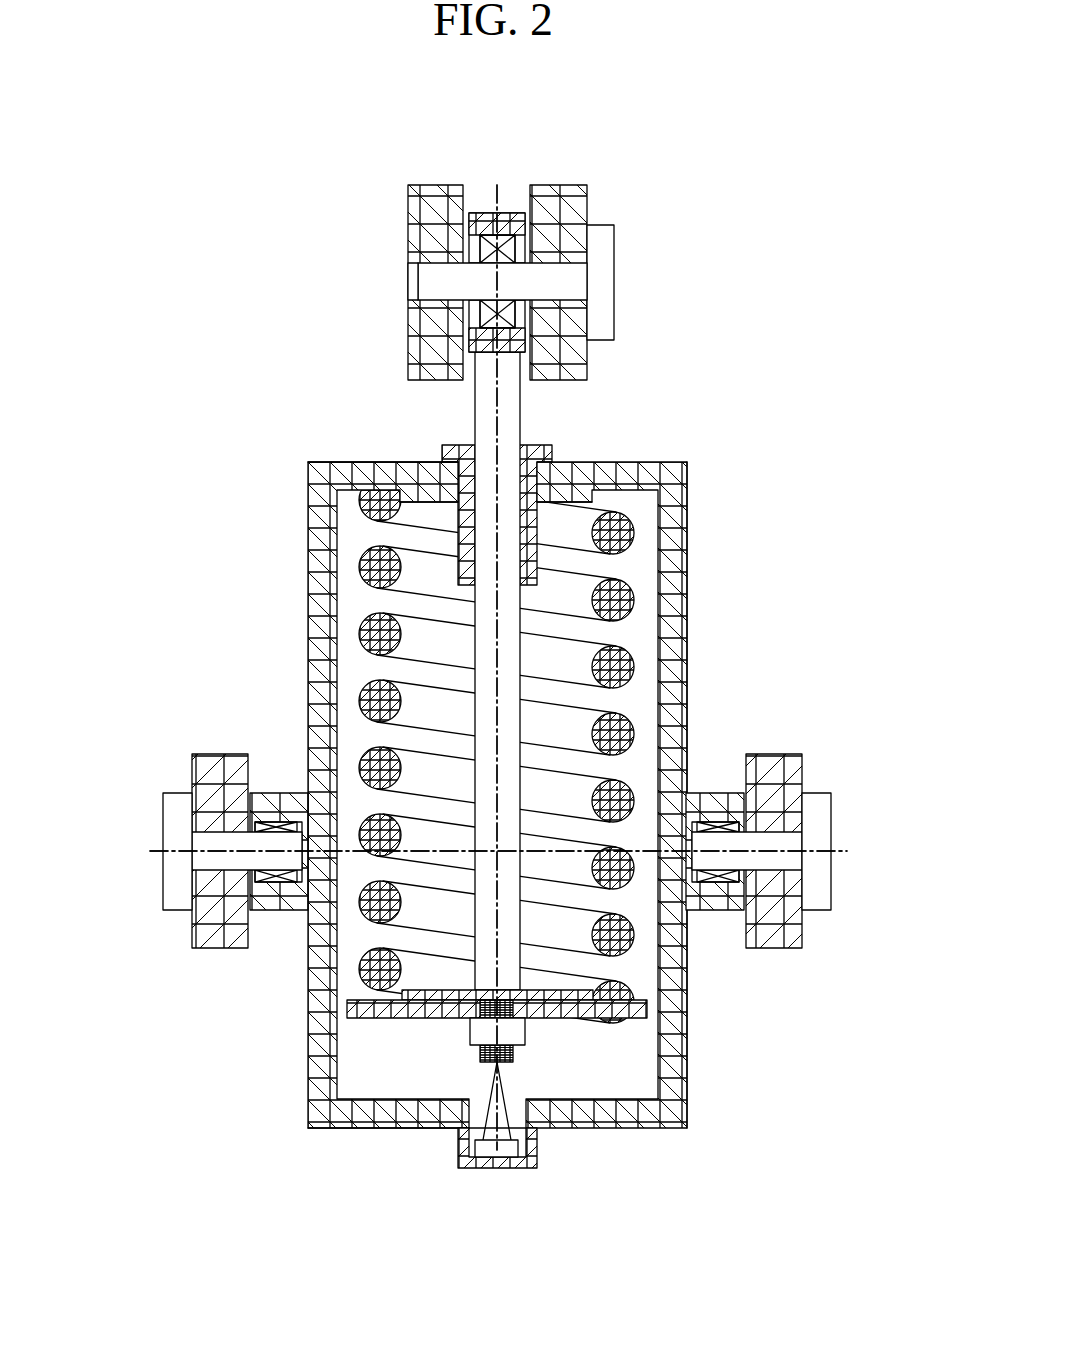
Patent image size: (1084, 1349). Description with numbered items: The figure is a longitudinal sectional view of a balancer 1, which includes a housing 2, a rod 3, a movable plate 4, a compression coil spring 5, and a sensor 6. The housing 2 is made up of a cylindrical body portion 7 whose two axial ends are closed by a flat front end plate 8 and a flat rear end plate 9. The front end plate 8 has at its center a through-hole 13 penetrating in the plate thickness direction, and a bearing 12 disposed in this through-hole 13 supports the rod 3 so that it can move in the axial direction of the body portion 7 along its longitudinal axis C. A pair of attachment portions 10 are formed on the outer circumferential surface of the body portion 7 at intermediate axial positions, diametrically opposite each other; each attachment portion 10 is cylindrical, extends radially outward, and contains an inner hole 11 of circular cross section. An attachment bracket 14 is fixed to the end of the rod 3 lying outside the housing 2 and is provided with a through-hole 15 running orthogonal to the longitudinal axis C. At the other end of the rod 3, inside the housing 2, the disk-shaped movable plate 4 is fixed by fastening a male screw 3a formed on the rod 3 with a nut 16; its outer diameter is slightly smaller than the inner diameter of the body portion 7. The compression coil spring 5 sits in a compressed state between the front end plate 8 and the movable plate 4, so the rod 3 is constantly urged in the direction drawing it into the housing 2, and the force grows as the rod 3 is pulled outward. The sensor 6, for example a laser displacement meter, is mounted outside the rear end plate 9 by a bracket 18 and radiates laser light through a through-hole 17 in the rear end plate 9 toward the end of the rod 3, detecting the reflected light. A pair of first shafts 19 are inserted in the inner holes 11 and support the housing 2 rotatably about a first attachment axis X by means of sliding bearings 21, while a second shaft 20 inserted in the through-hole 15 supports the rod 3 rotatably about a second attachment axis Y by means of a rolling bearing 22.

The balancer 1 is at (855, 230).
The housing 2 is at (687, 500).
The rod 3 is at (520, 418).
The male screw 3a is at (514, 1053).
The movable plate 4 is at (610, 1018).
The compression coil spring 5 is at (636, 596).
The sensor 6 is at (525, 1135).
The body portion 7 is at (687, 660).
The front end plate 8 is at (330, 462).
The rear end plate 9 is at (355, 1130).
The attachment portion 10 is at (272, 793).
The inner hole 11 is at (285, 883).
The bearing 12 is at (447, 517).
The through-hole 13 is at (467, 470).
The attachment bracket 14 is at (485, 212).
The through-hole 15 is at (522, 246).
The nut 16 is at (470, 1032).
The through-hole 17 is at (480, 1113).
The bracket 18 is at (490, 1168).
The first shaft 19 is at (163, 813).
The second shaft 20 is at (614, 243).
The sliding bearing 21 is at (252, 877).
The rolling bearing 22 is at (482, 243).
The longitudinal axis C is at (497, 392).
The first attachment axis X is at (840, 851).
The second attachment axis Y is at (385, 282).